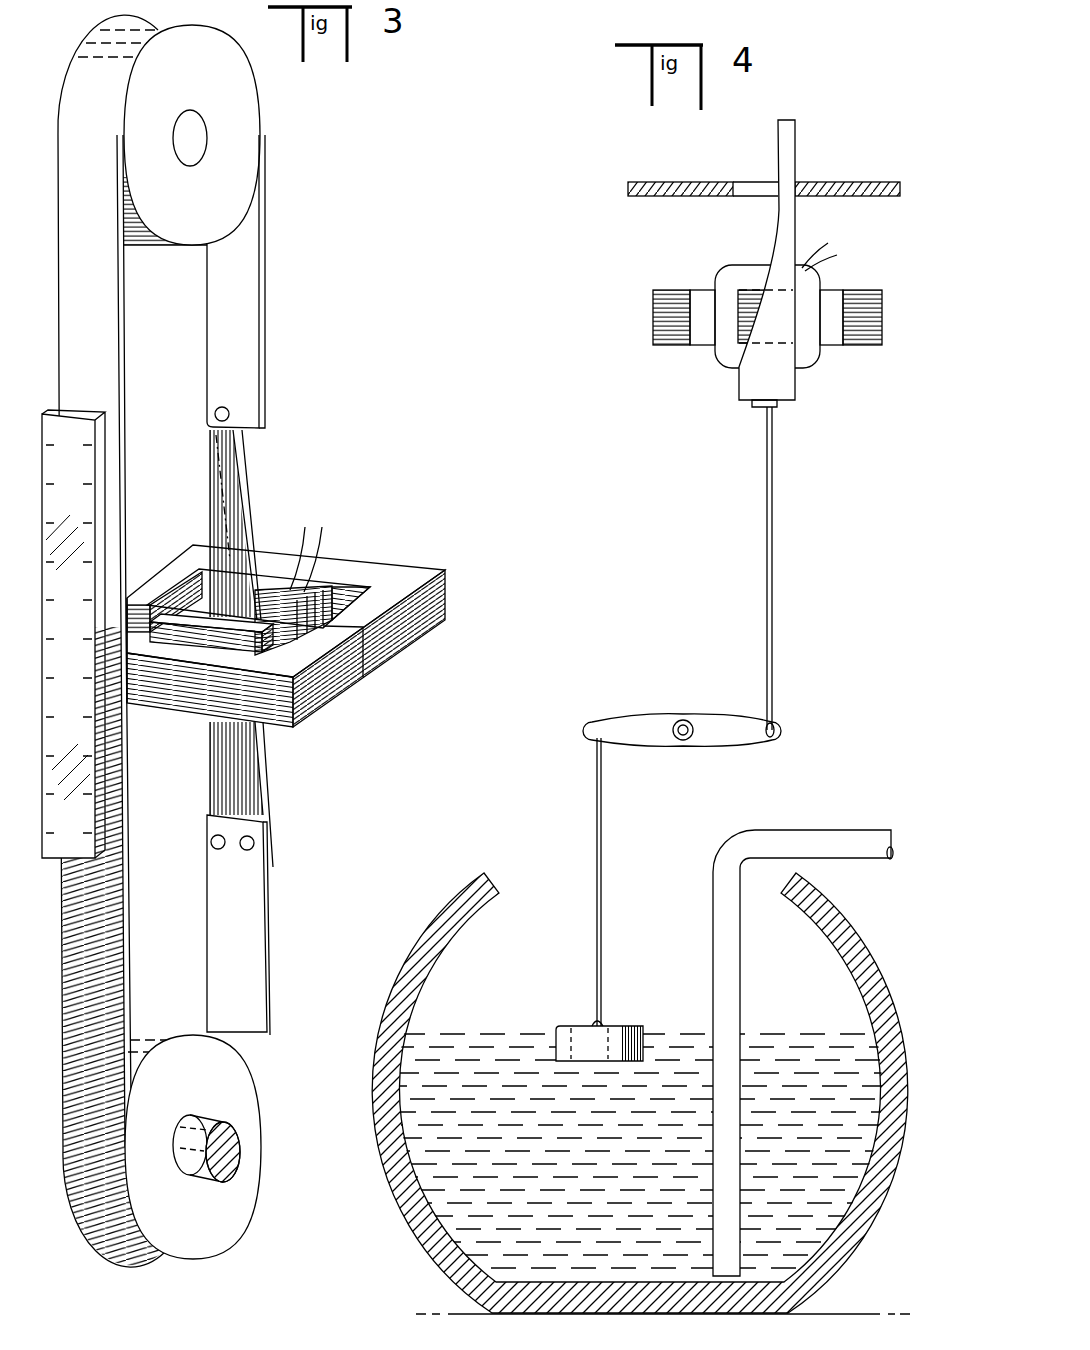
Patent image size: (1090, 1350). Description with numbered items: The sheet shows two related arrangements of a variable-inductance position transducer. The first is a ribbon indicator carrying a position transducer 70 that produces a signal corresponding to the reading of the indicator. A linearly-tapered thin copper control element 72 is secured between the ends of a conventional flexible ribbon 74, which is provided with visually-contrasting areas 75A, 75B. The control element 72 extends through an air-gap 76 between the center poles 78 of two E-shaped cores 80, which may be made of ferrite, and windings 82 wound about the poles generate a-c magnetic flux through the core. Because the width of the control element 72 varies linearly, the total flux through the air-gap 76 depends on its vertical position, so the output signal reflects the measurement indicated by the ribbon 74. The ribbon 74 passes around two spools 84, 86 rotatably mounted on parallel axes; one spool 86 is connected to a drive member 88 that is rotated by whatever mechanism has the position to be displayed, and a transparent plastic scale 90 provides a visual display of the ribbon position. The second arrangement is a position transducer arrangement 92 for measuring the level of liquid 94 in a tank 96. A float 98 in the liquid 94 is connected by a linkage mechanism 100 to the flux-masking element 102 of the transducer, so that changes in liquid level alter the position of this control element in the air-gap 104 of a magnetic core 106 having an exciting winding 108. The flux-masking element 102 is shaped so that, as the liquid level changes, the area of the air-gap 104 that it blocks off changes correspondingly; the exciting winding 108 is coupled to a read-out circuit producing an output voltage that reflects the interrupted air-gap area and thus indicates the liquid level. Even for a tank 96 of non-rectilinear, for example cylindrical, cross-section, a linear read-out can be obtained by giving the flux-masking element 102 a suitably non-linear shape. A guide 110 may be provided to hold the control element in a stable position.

In FIG. 3, the position transducer 70 is at (412, 544).
In FIG. 3, the control element 72 is at (222, 477).
In FIG. 3, the flexible ribbon 74 is at (250, 343).
In FIG. 3, the visually-contrasting area 75A is at (80, 950).
In FIG. 3, the visually-contrasting area 75B is at (85, 368).
In FIG. 3, the air-gap 76 is at (280, 631).
In FIG. 3, the center poles 78 is at (323, 588).
In FIG. 3, the E-shaped cores 80 is at (392, 664).
In FIG. 3, the windings 82 is at (273, 583).
In FIG. 3, the spool 84 is at (183, 222).
In FIG. 3, the spool 86 is at (177, 1058).
In FIG. 3, the drive member 88 is at (197, 1163).
In FIG. 3, the transparent plastic scale 90 is at (53, 845).
In FIG. 4, the position transducer arrangement 92 is at (669, 265).
In FIG. 4, the liquid 94 is at (502, 1050).
In FIG. 4, the tank 96 is at (464, 895).
In FIG. 4, the float 98 is at (620, 1032).
In FIG. 4, the linkage mechanism 100 is at (666, 692).
In FIG. 4, the flux-masking element 102 is at (753, 375).
In FIG. 4, the air-gap 104 is at (750, 305).
In FIG. 4, the magnetic core 106 is at (862, 290).
In FIG. 4, the exciting winding 108 is at (810, 350).
In FIG. 4, the guide 110 is at (673, 186).